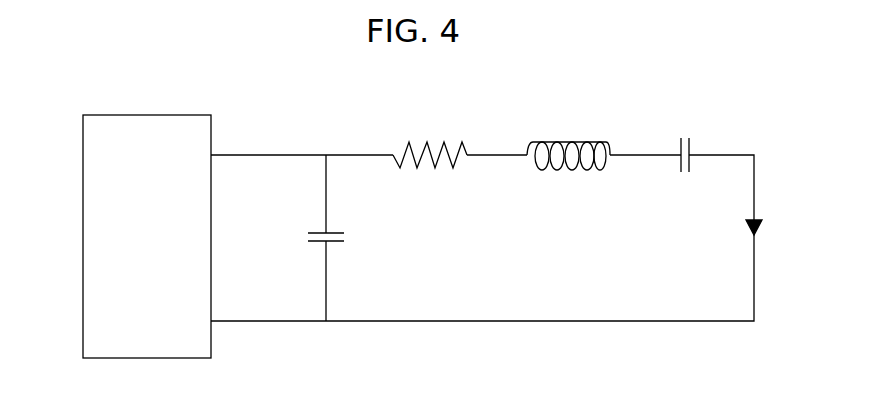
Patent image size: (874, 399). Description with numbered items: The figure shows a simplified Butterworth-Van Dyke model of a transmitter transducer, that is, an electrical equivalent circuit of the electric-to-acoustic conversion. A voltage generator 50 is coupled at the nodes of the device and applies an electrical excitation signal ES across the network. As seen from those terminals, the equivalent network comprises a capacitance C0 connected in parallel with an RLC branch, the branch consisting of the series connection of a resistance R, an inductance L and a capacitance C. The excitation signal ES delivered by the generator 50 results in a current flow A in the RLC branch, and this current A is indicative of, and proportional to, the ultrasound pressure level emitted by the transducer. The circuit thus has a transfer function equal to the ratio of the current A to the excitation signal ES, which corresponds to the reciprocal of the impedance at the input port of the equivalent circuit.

The voltage generator 50 is at (143, 126).
The resistance R is at (424, 142).
The inductance L is at (572, 142).
The capacitance C is at (691, 142).
The capacitance C0 is at (333, 244).
The excitation signal ES is at (292, 305).
The current flow A is at (766, 235).